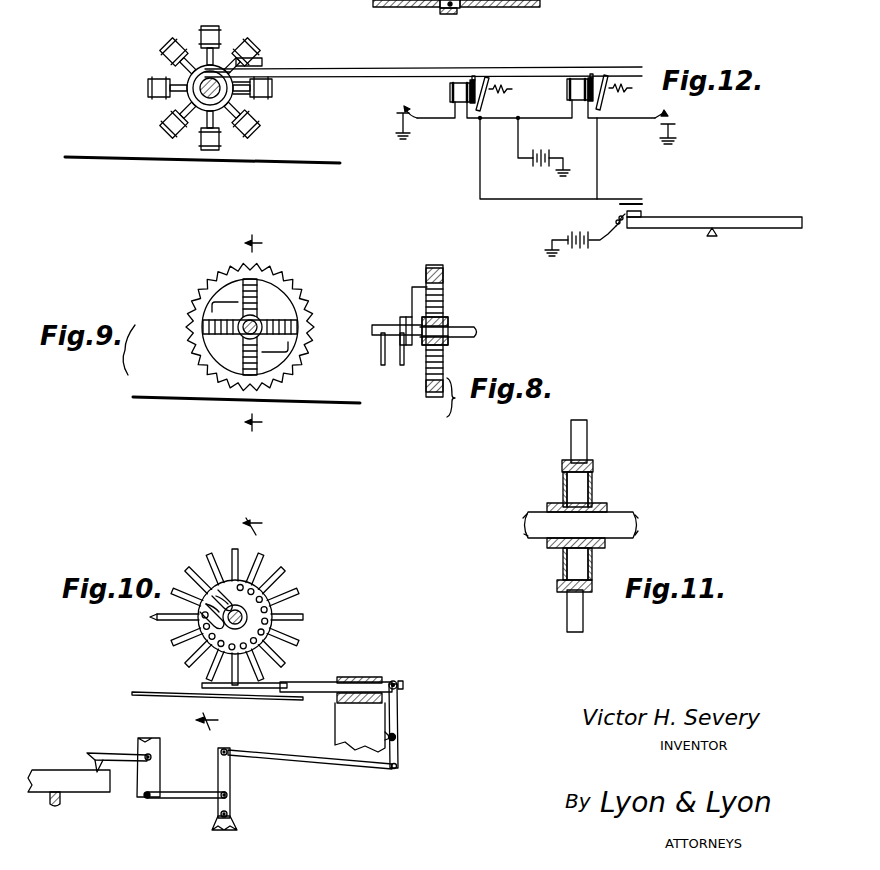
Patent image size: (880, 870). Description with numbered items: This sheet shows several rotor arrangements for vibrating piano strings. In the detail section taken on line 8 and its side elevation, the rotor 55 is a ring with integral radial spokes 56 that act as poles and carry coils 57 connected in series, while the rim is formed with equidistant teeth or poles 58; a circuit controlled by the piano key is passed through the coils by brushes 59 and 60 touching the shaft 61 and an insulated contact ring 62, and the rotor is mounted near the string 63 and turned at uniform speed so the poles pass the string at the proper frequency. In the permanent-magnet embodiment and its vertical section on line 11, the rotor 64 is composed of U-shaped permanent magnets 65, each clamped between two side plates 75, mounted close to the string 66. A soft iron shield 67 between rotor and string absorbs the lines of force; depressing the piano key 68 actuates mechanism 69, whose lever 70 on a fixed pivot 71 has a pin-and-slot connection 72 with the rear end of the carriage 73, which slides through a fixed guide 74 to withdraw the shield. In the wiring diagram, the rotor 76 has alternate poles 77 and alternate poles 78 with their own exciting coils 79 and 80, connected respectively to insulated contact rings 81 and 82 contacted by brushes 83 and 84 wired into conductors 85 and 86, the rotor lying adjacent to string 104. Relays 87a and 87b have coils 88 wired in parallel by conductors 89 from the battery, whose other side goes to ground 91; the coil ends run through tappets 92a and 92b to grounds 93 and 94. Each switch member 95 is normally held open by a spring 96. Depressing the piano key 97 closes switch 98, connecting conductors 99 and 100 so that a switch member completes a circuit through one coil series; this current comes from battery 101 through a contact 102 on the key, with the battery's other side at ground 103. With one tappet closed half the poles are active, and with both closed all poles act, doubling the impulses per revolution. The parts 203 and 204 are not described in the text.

In FIG. 9, the section line 8— 8 is at (259, 333).
In FIG. 10, the section line 11— 11 is at (240, 624).
In FIG. 9, the rotor 55 is at (222, 276).
In FIG. 8, the rotor 55 is at (444, 280).
In FIG. 9, the radial spokes 56 is at (258, 305).
In FIG. 8, the radial spokes 56 is at (444, 300).
In FIG. 9, the coils 57 is at (203, 323).
In FIG. 8, the coils 57 is at (444, 366).
In FIG. 9, the teeth or poles 58 is at (303, 292).
In FIG. 8, the teeth or poles 58 is at (446, 258).
In FIG. 8, the brush 59 is at (380, 350).
In FIG. 8, the brush 60 is at (399, 360).
In FIG. 9, the shaft 61 is at (240, 340).
In FIG. 8, the shaft 61 is at (470, 332).
In FIG. 8, the insulated contact ring 62 is at (404, 318).
In FIG. 9, the string 63 is at (330, 404).
In FIG. 8, the string 63 is at (432, 402).
In FIG. 10, the rotor 64 is at (272, 590).
In FIG. 11, the rotor 64 is at (562, 562).
In FIG. 10, the permanent magnets 65 is at (300, 596).
In FIG. 11, the permanent magnets 65 is at (584, 447).
In FIG. 10, the string 66 is at (255, 699).
In FIG. 10, the shield 67 is at (268, 683).
In FIG. 10, the piano key 68 is at (45, 778).
In FIG. 10, the mechanism 69 is at (250, 757).
In FIG. 10, the lever 70 is at (399, 718).
In FIG. 10, the fixed pivot 71 is at (396, 737).
In FIG. 10, the pin-and-slot connection 72 is at (398, 682).
In FIG. 10, the carriage 73 is at (362, 682).
In FIG. 10, the fixed guide 74 is at (378, 678).
In FIG. 10, the side plates 75 is at (278, 620).
In FIG. 11, the side plates 75 is at (564, 486).
In FIG. 12, the rotor 76 is at (144, 89).
In FIG. 12, the poles 77 is at (176, 50).
In FIG. 12, the poles 78 is at (216, 26).
In FIG. 12, the exciting coils 79 is at (182, 58).
In FIG. 12, the exciting coils 80 is at (222, 32).
In FIG. 12, the insulated contact ring 81 is at (220, 126).
In FIG. 12, the insulated contact ring 82 is at (268, 99).
In FIG. 12, the brush 83 is at (250, 72).
In FIG. 12, the brush 84 is at (262, 60).
In FIG. 12, the conductor 85 is at (374, 76).
In FIG. 12, the conductor 86 is at (412, 54).
In FIG. 12, the relay 87a is at (450, 93).
In FIG. 12, the relay 87b is at (567, 92).
In FIG. 12, the relay coils 88 is at (472, 80).
In FIG. 12, the conductors 89 is at (518, 138).
In FIG. 12, the ground 91 is at (564, 167).
In FIG. 12, the tappet 92a is at (414, 120).
In FIG. 12, the tappet 92b is at (656, 118).
In FIG. 12, the ground 93 is at (400, 133).
In FIG. 12, the ground 94 is at (676, 144).
In FIG. 12, the switch member 95 is at (488, 80).
In FIG. 12, the spring 96 is at (503, 88).
In FIG. 12, the piano key 97 is at (769, 224).
In FIG. 12, the switch 98 is at (632, 200).
In FIG. 12, the conductor 99 is at (600, 182).
In FIG. 12, the conductor 100 is at (552, 202).
In FIG. 12, the battery 101 is at (589, 243).
In FIG. 12, the contact 102 is at (643, 213).
In FIG. 12, the ground 103 is at (550, 250).
In FIG. 12, the string 104 is at (318, 165).
In FIG. 12, the support 203 is at (440, 10).
In FIG. 12, the support 204 is at (458, 8).